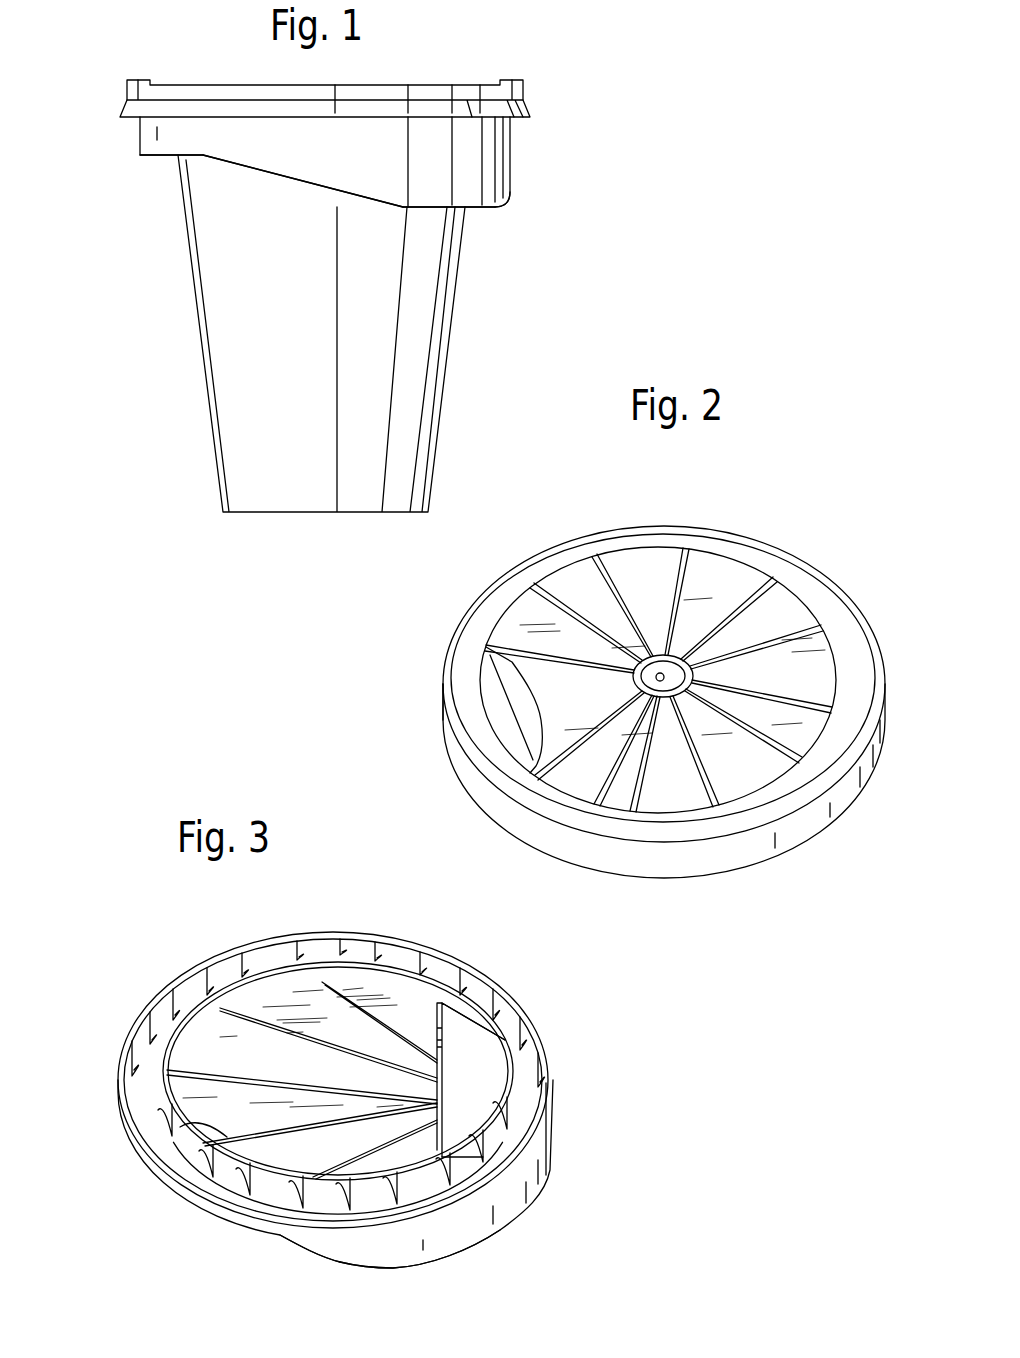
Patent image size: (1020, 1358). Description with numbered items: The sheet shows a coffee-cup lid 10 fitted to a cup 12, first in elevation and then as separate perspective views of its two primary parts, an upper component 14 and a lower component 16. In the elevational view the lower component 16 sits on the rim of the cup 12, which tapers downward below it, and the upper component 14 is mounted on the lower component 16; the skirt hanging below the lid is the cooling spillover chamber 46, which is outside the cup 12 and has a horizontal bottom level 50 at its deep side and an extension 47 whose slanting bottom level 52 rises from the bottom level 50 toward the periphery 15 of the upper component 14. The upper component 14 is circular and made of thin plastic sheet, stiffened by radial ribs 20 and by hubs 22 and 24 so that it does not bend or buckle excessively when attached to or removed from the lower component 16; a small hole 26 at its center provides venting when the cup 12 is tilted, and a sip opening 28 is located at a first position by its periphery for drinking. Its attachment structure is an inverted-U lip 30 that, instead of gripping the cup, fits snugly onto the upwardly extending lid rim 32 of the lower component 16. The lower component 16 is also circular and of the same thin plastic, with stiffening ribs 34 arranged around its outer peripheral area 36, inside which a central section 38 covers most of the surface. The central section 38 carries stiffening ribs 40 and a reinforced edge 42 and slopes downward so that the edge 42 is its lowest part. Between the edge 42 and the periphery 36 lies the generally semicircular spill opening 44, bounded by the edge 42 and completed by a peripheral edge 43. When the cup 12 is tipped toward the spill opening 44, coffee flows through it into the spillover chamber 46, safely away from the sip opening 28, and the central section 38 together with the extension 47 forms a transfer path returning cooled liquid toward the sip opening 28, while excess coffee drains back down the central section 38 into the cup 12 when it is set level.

In FIG. 1, the lid 10 is at (116, 88).
In FIG. 1, the cup 12 is at (203, 365).
In FIG. 1, the upper component 14 is at (523, 88).
In FIG. 2, the upper component 14 is at (501, 516).
In FIG. 2, the periphery of the upper component 15 is at (490, 795).
In FIG. 1, the lower component 16 is at (509, 165).
In FIG. 2, the ribs 20 is at (745, 607).
In FIG. 2, the hub 22 is at (690, 655).
In FIG. 2, the hub 24 is at (632, 528).
In FIG. 2, the small hole 26 is at (782, 785).
In FIG. 2, the sip opening 28 is at (492, 681).
In FIG. 2, the inverted-U lip 30 is at (748, 868).
In FIG. 3, the lid rim 32 is at (503, 1043).
In FIG. 3, the ribs 34 is at (470, 975).
In FIG. 3, the outer peripheral area 36 is at (263, 953).
In FIG. 3, the central section 38 is at (278, 1163).
In FIG. 3, the stiffening ribs 40 is at (170, 1105).
In FIG. 3, the reinforced edge 42 is at (483, 1157).
In FIG. 3, the peripheral edge 43 is at (525, 992).
In FIG. 3, the spill opening 44 is at (473, 1110).
In FIG. 1, the cooling spillover chamber 46 is at (504, 203).
In FIG. 3, the cooling spillover chamber 46 is at (159, 984).
In FIG. 1, the extension of the spillover chamber 47 is at (218, 160).
In FIG. 1, the horizontal bottom level 50 is at (477, 208).
In FIG. 3, the horizontal bottom level 50 is at (400, 1268).
In FIG. 1, the slanting bottom level 52 is at (275, 166).
In FIG. 3, the slanting bottom level 52 is at (320, 1250).